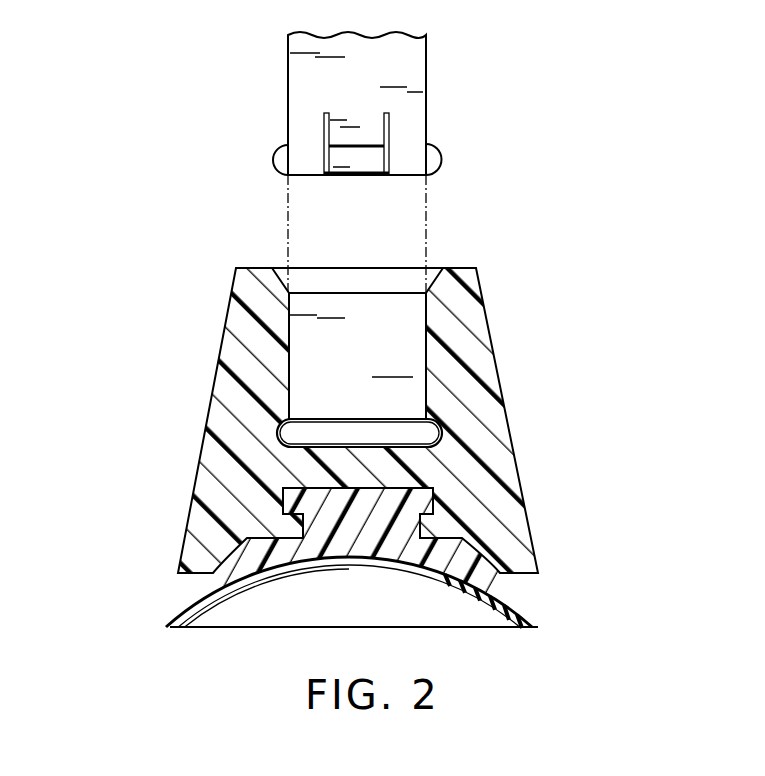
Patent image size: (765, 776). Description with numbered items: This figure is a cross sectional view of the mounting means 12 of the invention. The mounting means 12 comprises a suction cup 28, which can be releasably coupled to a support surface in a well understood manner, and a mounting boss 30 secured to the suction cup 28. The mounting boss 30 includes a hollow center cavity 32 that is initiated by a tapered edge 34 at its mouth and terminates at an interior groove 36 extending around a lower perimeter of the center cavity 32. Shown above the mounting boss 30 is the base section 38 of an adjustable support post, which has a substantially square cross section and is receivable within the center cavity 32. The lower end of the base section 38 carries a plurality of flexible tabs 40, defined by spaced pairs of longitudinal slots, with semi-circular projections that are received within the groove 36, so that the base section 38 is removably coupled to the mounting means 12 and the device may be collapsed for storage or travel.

The mounting means 12 is at (356, 407).
The suction cup 28 is at (523, 603).
The mounting boss 30 is at (218, 353).
The center cavity 32 is at (343, 352).
The tapered edge 34 is at (426, 292).
The interior groove 36 is at (281, 443).
The base section 38 is at (413, 70).
The flexible tabs 40 is at (274, 160).